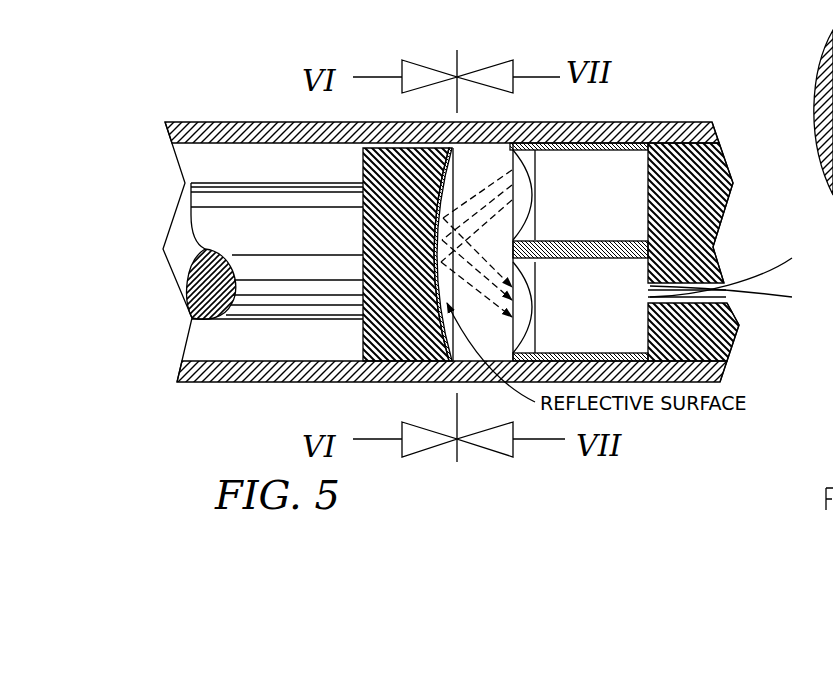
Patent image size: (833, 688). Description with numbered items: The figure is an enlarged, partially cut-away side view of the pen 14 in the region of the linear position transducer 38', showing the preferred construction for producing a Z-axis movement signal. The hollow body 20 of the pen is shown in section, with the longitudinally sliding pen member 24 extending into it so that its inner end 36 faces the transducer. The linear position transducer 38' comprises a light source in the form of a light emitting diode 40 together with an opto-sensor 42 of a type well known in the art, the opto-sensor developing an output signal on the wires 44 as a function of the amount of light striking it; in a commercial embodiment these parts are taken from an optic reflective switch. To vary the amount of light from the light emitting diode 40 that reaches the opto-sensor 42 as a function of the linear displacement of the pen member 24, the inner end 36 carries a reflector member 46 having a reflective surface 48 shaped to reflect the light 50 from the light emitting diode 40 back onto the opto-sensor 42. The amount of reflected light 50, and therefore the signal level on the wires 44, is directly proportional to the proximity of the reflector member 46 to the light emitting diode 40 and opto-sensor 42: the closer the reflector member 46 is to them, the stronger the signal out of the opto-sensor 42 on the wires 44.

The pen 14 is at (277, 58).
The hollow body 20 is at (225, 122).
The inner end 36 is at (322, 178).
The pen member 24 is at (273, 303).
The reflector member 46 is at (405, 360).
The reflective surface 48 is at (452, 185).
The light 50 is at (545, 124).
The linear position transducer 38' is at (608, 213).
The light emitting diode 40 is at (630, 180).
The opto-sensor 42 is at (632, 270).
The wires 44 is at (765, 298).